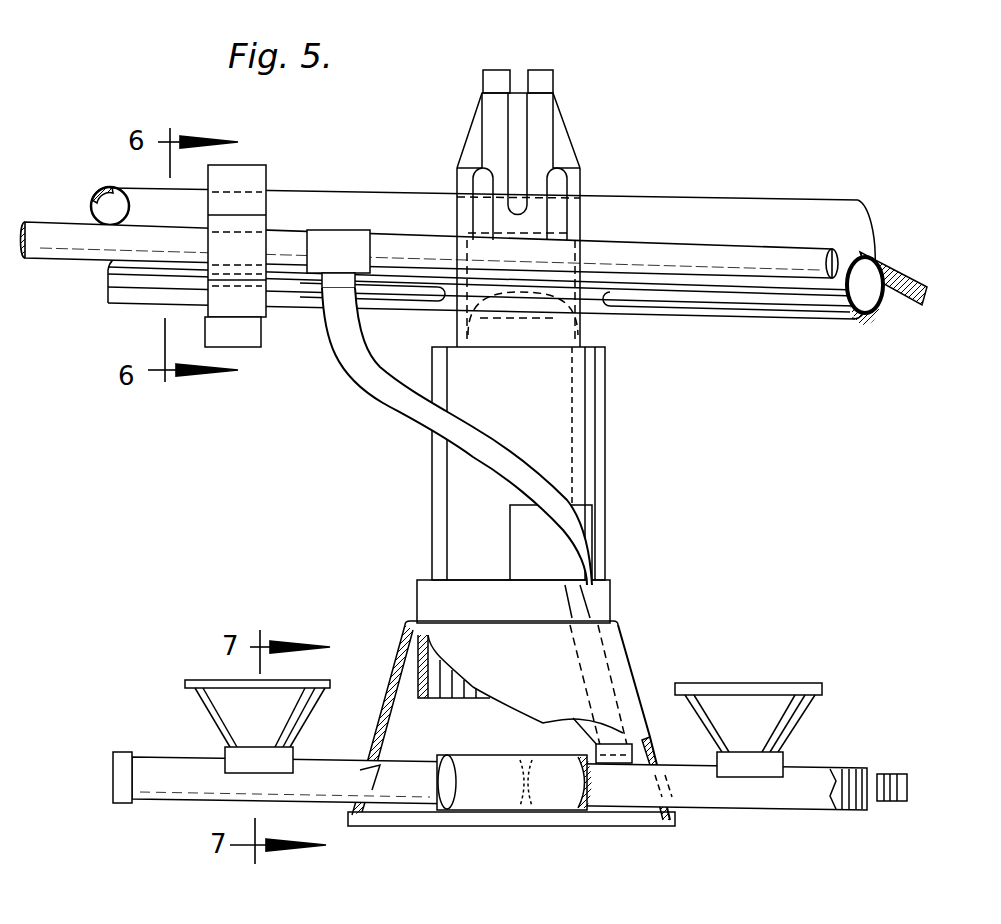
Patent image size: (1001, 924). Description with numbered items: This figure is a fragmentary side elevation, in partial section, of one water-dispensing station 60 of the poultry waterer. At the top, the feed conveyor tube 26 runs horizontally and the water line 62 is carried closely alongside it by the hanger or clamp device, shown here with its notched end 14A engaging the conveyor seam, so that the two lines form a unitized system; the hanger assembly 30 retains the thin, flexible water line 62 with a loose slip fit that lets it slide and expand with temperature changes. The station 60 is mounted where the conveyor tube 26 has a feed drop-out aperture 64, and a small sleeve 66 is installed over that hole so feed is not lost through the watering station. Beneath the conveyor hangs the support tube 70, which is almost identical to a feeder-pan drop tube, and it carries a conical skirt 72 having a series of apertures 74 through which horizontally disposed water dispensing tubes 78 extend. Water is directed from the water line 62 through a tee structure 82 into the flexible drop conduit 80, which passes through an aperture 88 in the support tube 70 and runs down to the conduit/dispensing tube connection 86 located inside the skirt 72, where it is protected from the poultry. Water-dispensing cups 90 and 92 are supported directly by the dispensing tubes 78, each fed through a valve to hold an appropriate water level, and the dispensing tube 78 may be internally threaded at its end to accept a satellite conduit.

The guide frame 14A is at (130, 272).
The feed conveyor tube 26 is at (777, 183).
The clamp assembly 30 is at (605, 183).
The water-dispensing station 60 is at (352, 385).
The water line 62 is at (810, 247).
The feed drop-out aperture 64 is at (582, 325).
The sleeve 66 is at (470, 333).
The support tube 70 is at (595, 388).
The skirt 72 is at (398, 650).
The aperture 74 is at (372, 770).
The water dispensing tube 78 is at (728, 788).
The water conduit 80 is at (418, 410).
The tee structure 82 is at (338, 252).
The conduit/dispensing tube connection 86 is at (598, 755).
The aperture 88 is at (585, 523).
The water-dispensing cup 90 is at (787, 712).
The water-dispensing cup 92 is at (200, 689).